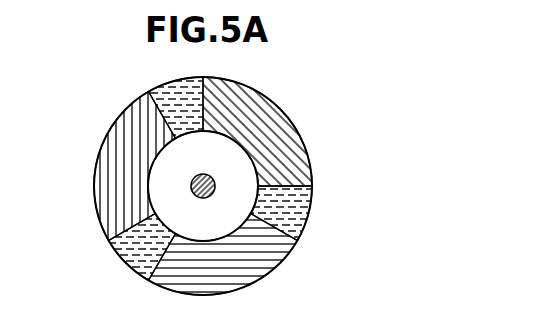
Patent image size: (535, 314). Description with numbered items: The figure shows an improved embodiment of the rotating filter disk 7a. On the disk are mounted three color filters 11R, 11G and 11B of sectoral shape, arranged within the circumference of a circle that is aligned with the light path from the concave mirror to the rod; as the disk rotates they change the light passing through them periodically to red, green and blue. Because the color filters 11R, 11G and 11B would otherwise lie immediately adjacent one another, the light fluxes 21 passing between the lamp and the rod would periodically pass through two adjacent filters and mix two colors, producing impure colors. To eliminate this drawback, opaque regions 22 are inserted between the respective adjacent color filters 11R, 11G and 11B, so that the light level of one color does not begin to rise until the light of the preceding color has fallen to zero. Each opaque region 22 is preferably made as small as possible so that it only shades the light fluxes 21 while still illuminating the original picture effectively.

The filter disk 7a is at (330, 185).
The light fluxes 21 is at (236, 79).
The opaque regions 22 is at (172, 86).
The red color filter 11R is at (120, 125).
The green color filter 11G is at (287, 157).
The blue color filter 11B is at (264, 266).